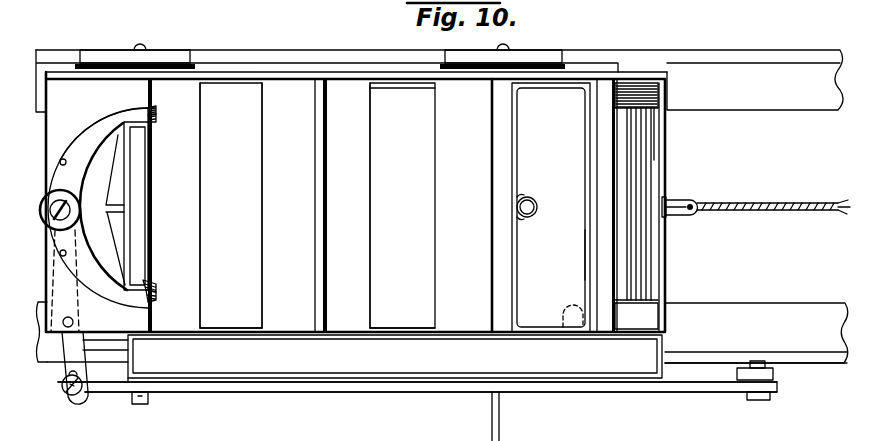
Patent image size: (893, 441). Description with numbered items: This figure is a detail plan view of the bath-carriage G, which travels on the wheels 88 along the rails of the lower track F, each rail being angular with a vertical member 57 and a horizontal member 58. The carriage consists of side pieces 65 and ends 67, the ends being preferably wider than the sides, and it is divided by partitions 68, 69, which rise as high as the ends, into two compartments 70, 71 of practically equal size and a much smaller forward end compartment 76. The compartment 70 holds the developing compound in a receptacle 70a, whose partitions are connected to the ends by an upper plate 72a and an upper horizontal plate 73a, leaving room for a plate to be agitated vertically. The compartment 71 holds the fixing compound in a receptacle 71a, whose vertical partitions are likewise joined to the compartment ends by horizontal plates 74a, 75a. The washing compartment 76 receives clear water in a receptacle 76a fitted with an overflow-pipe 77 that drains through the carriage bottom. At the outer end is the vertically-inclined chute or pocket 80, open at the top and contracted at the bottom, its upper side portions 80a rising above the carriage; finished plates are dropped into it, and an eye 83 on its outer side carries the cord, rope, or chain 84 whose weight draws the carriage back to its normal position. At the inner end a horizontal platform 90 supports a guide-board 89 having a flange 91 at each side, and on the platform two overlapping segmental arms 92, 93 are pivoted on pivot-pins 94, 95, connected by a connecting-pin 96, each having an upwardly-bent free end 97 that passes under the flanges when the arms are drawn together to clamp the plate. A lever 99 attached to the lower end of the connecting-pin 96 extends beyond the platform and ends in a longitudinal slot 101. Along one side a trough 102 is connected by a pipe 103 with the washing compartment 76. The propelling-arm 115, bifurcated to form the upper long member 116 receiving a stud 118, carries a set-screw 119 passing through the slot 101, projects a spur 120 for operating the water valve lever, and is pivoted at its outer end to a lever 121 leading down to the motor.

The vertical section or member 57 is at (250, 56).
The horizontal member 58 is at (814, 112).
The track F is at (738, 186).
The bath-carriage G is at (350, 41).
The side pieces 65 is at (405, 75).
The ends 67 is at (607, 205).
The partition 68 is at (327, 179).
The partition 69 is at (502, 163).
The compartment 70 is at (231, 205).
The receptacle 70a is at (242, 327).
The compartment 71 is at (402, 205).
The receptacle 71a is at (393, 326).
The upper plate 72a is at (200, 210).
The upper horizontal plate 73a is at (267, 243).
The horizontal plate 74a is at (369, 116).
The horizontal plate 75a is at (490, 130).
The compartment 76 is at (551, 207).
The receptacle 76a is at (586, 255).
The overflow-pipe 77 is at (535, 207).
The chute 80 is at (640, 150).
The upper side portions of chute 80a is at (636, 95).
The eye 83 is at (677, 200).
The cord, rope, or chain 84 is at (782, 205).
The wheels 88 is at (164, 61).
The guide-board 89 is at (124, 230).
The horizontal platform 90 is at (98, 211).
The flange 91 is at (156, 117).
The segmental arm 92 is at (79, 130).
The segmental arm 93 is at (103, 207).
The pivot-pin 94 is at (66, 161).
The pivot-pin 95 is at (66, 254).
The connecting-pin 96 is at (60, 200).
The free end 97 is at (154, 132).
The lever 99 is at (62, 368).
The longitudinal slot 101 is at (72, 396).
The trough 102 is at (395, 356).
The pipe 103 is at (578, 307).
The propelling-arm 115 is at (605, 390).
The upper long member 116 is at (120, 364).
The stud 118 is at (149, 397).
The set-screw 119 is at (70, 390).
The spur 120 is at (491, 415).
The lever 121 is at (754, 395).